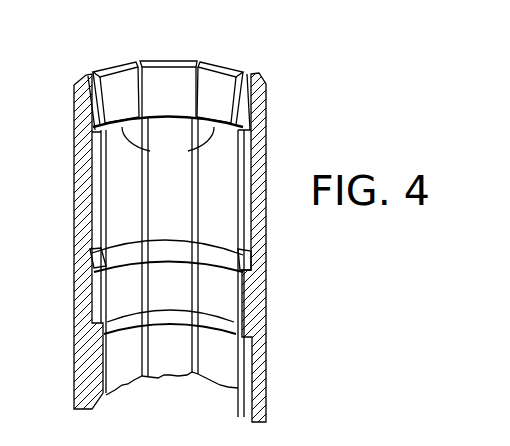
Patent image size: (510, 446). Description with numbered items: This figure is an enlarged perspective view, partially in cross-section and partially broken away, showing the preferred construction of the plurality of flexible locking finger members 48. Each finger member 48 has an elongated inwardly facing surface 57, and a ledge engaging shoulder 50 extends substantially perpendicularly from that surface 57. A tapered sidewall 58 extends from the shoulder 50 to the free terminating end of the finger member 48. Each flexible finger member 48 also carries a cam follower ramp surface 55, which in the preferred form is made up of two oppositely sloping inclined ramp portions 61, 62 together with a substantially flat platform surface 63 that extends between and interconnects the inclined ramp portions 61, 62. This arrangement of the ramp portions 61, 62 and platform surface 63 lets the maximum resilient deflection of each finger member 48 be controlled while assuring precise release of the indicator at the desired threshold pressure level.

The locking finger member 48 is at (124, 60).
The ledge engaging shoulder 50 is at (168, 140).
The cam follower ramp surface 55 is at (212, 246).
The elongated inwardly facing surface 57 is at (118, 178).
The tapered sidewall 58 is at (90, 102).
The inclined ramp portion 61 is at (90, 253).
The inclined ramp portion 62 is at (123, 323).
The flat platform surface 63 is at (99, 292).